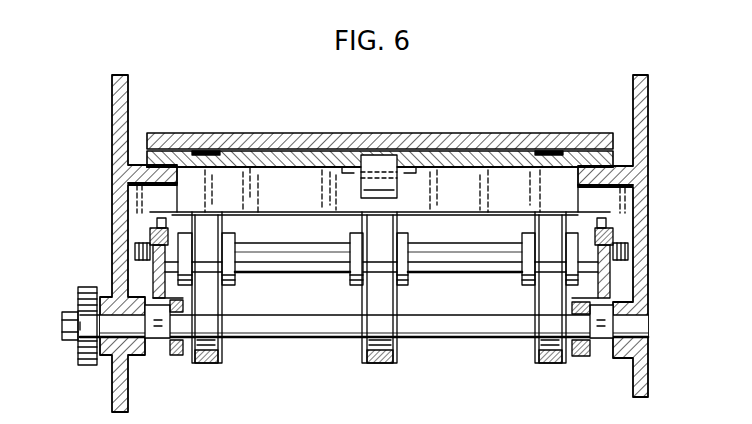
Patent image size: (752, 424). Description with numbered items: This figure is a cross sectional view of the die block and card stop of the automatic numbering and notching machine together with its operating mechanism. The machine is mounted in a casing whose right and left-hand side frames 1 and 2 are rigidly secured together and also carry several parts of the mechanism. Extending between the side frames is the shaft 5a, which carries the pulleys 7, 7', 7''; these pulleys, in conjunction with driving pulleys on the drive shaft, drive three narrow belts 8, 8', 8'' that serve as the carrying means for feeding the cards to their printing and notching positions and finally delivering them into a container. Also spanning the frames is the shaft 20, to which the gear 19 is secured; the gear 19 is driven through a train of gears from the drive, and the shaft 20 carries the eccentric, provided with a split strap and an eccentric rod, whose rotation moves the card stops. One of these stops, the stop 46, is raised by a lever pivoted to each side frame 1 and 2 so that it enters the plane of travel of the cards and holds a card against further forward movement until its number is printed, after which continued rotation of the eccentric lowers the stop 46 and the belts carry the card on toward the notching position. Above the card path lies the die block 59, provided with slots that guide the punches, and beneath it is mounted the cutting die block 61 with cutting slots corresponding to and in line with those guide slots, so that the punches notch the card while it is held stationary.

The right-hand side frame 1 is at (650, 118).
The left-hand side frame 2 is at (112, 116).
The shaft 5a is at (300, 273).
The pulley 7 is at (545, 306).
The pulley 7' is at (384, 306).
The pulley 7'' is at (216, 306).
The belt 8 is at (550, 305).
The belt 8' is at (379, 306).
The belt 8'' is at (207, 306).
The gear 19 is at (78, 295).
The shaft 20 is at (460, 341).
The stop 46 is at (487, 207).
The die block 59 is at (479, 134).
The cutting die block 61 is at (455, 160).